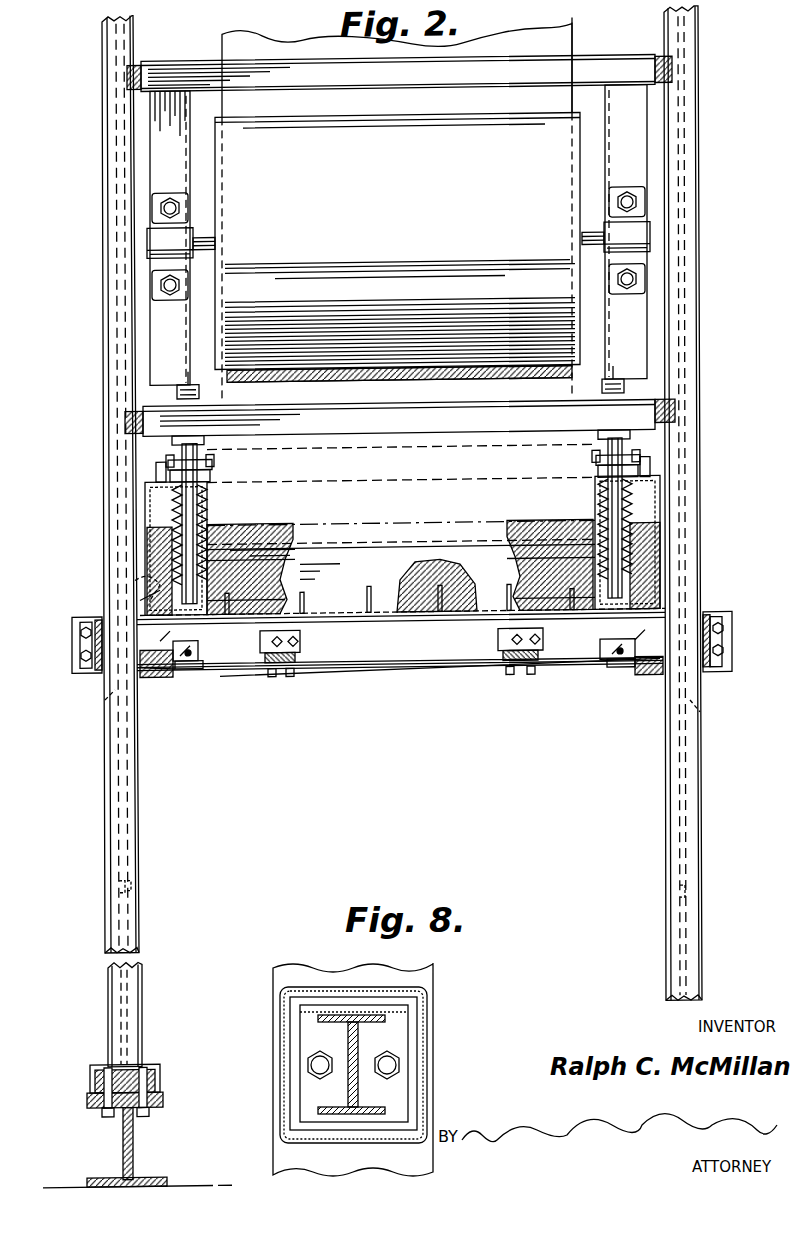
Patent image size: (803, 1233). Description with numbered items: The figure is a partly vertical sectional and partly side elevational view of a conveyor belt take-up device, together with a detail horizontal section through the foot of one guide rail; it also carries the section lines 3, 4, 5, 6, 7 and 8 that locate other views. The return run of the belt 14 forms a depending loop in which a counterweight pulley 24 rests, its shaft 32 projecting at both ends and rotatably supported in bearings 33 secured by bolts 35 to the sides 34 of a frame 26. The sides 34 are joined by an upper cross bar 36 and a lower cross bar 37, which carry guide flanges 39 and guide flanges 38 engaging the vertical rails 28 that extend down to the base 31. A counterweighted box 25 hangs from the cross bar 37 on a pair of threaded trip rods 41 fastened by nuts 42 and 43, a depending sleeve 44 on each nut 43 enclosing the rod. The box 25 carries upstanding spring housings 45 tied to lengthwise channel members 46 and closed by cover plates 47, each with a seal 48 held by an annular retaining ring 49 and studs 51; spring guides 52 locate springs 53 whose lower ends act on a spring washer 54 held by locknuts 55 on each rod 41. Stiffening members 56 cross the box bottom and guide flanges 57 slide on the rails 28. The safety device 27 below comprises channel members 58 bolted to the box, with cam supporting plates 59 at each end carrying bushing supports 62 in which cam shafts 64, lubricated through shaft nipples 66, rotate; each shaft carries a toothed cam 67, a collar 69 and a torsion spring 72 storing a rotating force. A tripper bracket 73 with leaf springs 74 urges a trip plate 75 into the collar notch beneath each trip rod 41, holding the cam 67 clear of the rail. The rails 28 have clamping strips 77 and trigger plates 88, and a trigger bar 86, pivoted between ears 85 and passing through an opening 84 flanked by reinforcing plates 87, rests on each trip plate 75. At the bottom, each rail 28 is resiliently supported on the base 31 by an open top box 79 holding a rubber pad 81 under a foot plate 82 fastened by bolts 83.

In FIG. 2, the section line 3- 3 is at (735, 456).
In FIG. 2, the section line 4- 4 is at (765, 617).
In FIG. 2, the section line 5- 5 is at (738, 389).
In FIG. 2, the section line 6- 6 is at (597, 713).
In FIG. 2, the section line 7- 7 is at (647, 693).
In FIG. 2, the section line 8- 8 is at (200, 1049).
In FIG. 2, the belt 14 is at (510, 395).
In FIG. 2, the counterweight pulley 24 is at (370, 372).
In FIG. 2, the box 25 is at (358, 500).
In FIG. 2, the frame 26 is at (459, 440).
In FIG. 2, the safety device 27 is at (435, 673).
In FIG. 2, the vertical rails 28 is at (668, 815).
In FIG. 8, the vertical rails 28 is at (348, 1035).
In FIG. 2, the base 31 is at (133, 1141).
In FIG. 8, the base 31 is at (425, 975).
In FIG. 2, the shaft 32 is at (565, 242).
In FIG. 2, the bearings 33 is at (578, 215).
In FIG. 2, the sides 34 is at (580, 319).
In FIG. 2, the bolts 35 is at (575, 283).
In FIG. 2, the cross bar 36 is at (478, 80).
In FIG. 2, the cross bar 37 is at (300, 430).
In FIG. 2, the guide flanges 38 is at (675, 413).
In FIG. 2, the guide rail engaging flanges 39 is at (672, 72).
In FIG. 2, the trip rods 41 is at (578, 511).
In FIG. 2, the nuts 42 is at (585, 391).
In FIG. 2, the nuts 43 is at (590, 420).
In FIG. 2, the sleeve 44 is at (592, 450).
In FIG. 2, the spring housings 45 is at (578, 568).
In FIG. 2, the channel members 46 is at (520, 556).
In FIG. 2, the cover plates 47 is at (565, 472).
In FIG. 2, the seal 48 is at (568, 458).
In FIG. 2, the annular retaining ring 49 is at (655, 470).
In FIG. 2, the studs 51 is at (650, 450).
In FIG. 2, the spring guides 52 is at (578, 492).
In FIG. 2, the springs 53 is at (578, 530).
In FIG. 2, the spring washer 54 is at (578, 593).
In FIG. 2, the locknuts 55 is at (592, 631).
In FIG. 2, the stiffening members 56 is at (465, 585).
In FIG. 2, the guide flanges 57 is at (708, 569).
In FIG. 2, the channel members 58 is at (375, 668).
In FIG. 2, the cam supporting plates 59 is at (718, 689).
In FIG. 2, the bushing support 62 is at (728, 604).
In FIG. 2, the cam shaft 64 is at (740, 634).
In FIG. 2, the shaft nipples 66 is at (740, 656).
In FIG. 2, the cam 67 is at (401, 707).
In FIG. 2, the collar 69 is at (578, 652).
In FIG. 2, the torsion spring 72 is at (147, 557).
In FIG. 2, the tripper bracket 73 is at (492, 646).
In FIG. 2, the leaf springs 74 is at (560, 672).
In FIG. 2, the trip plate 75 is at (605, 687).
In FIG. 2, the clamping strips 77 is at (720, 825).
In FIG. 2, the open top box 79 is at (160, 1068).
In FIG. 8, the open top box 79 is at (425, 1005).
In FIG. 2, the pad 81 is at (160, 1078).
In FIG. 8, the pad 81 is at (413, 1030).
In FIG. 2, the foot plate 82 is at (90, 1076).
In FIG. 8, the foot plate 82 is at (400, 1092).
In FIG. 2, the bolts 83 is at (165, 1116).
In FIG. 8, the bolts 83 is at (310, 1088).
In FIG. 2, the opening 84 is at (690, 623).
In FIG. 2, the ears 85 is at (622, 688).
In FIG. 2, the trigger bar 86 is at (618, 687).
In FIG. 2, the reinforcing plates 87 is at (140, 602).
In FIG. 2, the trigger plate 88 is at (686, 894).